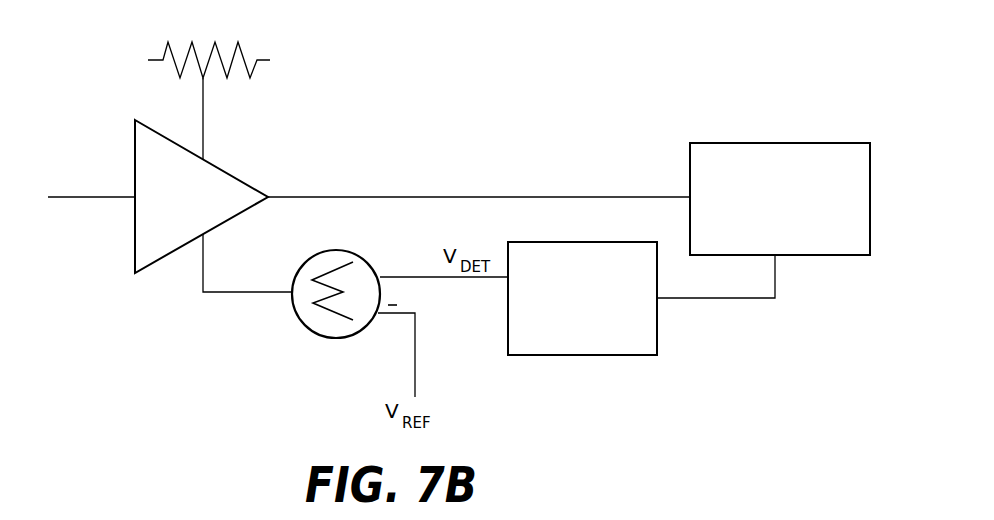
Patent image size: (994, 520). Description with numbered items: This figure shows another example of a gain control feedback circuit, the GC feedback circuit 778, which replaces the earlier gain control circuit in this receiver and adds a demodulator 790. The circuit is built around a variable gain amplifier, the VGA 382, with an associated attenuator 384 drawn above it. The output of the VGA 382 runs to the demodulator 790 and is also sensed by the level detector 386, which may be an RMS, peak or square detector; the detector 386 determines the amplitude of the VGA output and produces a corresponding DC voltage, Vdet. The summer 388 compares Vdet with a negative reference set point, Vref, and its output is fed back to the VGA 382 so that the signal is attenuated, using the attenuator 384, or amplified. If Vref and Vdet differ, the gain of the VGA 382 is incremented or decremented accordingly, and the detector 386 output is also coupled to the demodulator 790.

The GC feedback circuit 778 is at (470, 72).
The attenuator 384 is at (193, 44).
The variable gain amplifier 382 is at (201, 196).
The summer 388 is at (307, 330).
The level detector 386 is at (582, 298).
The demodulator 790 is at (780, 199).